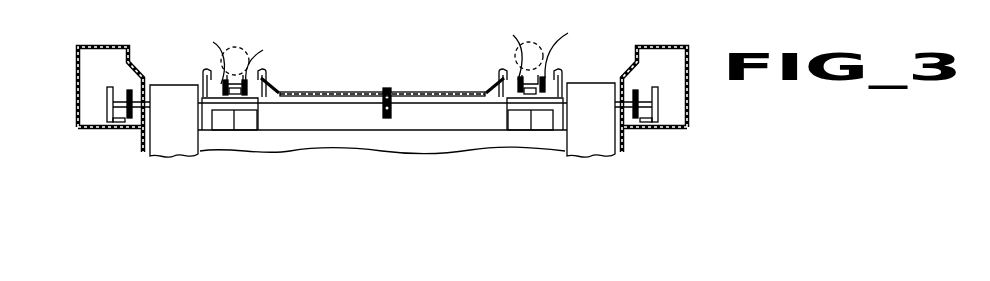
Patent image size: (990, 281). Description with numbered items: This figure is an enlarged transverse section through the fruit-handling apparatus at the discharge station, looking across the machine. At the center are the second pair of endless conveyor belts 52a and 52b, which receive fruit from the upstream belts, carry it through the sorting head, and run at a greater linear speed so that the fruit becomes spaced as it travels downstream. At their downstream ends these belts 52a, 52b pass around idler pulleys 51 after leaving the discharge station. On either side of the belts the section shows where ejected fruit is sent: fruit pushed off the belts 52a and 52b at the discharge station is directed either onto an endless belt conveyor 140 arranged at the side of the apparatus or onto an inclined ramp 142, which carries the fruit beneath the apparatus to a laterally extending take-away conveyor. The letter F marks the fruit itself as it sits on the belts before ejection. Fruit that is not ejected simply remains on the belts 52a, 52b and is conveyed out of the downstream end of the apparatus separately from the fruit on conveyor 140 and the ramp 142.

The endless belt conveyor 140 is at (193, 133).
The inclined ramp 142 is at (342, 92).
The idler pulleys 51 is at (224, 86).
The endless conveyor belt 52a is at (264, 50).
The endless conveyor belt 52b is at (214, 43).
The lamp bulb / filament F is at (240, 43).